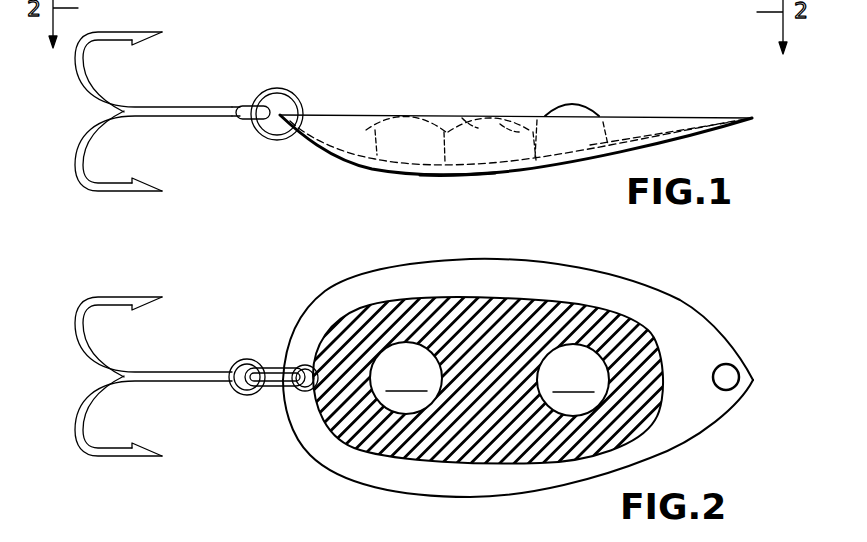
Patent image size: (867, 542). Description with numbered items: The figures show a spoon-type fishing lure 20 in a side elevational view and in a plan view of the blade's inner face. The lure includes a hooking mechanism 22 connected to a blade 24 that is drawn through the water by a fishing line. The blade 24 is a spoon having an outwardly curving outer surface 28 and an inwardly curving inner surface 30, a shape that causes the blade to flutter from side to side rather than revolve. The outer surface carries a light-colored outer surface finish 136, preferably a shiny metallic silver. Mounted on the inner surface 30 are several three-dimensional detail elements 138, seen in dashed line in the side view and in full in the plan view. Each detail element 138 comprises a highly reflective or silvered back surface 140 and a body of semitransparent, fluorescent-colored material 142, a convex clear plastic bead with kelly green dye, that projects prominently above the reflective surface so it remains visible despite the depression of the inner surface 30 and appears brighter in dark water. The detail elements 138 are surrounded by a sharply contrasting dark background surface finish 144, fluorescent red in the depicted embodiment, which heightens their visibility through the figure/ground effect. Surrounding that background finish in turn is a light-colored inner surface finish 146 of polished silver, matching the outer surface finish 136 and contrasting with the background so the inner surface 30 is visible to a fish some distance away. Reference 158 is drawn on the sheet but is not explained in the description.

In FIG. 1, the fishing lure 20 is at (113, 217).
In FIG. 2, the fishing lure 20 is at (111, 486).
In FIG. 1, the hooking mechanism 22 is at (200, 107).
In FIG. 2, the hooking mechanism 22 is at (199, 371).
In FIG. 1, the blade 24 is at (313, 163).
In FIG. 1, the outer surface 28 is at (485, 174).
In FIG. 1, the inner surface 30 is at (324, 134).
In FIG. 2, the inner surface 30 is at (606, 273).
In FIG. 1, the outer surface finish 136 is at (673, 116).
In FIG. 1, the detail element 138 is at (495, 124).
In FIG. 2, the detail element 138 is at (412, 342).
In FIG. 1, the back surface 140 is at (418, 153).
In FIG. 1, the semitransparent fluorescent-colored material 142 is at (366, 130).
In FIG. 2, the semitransparent fluorescent-colored material 142 is at (489, 379).
In FIG. 2, the background surface finish 144 is at (366, 305).
In FIG. 2, the inner surface finish 146 is at (700, 342).
In FIG. 2, the lower blade portion 158 is at (518, 461).